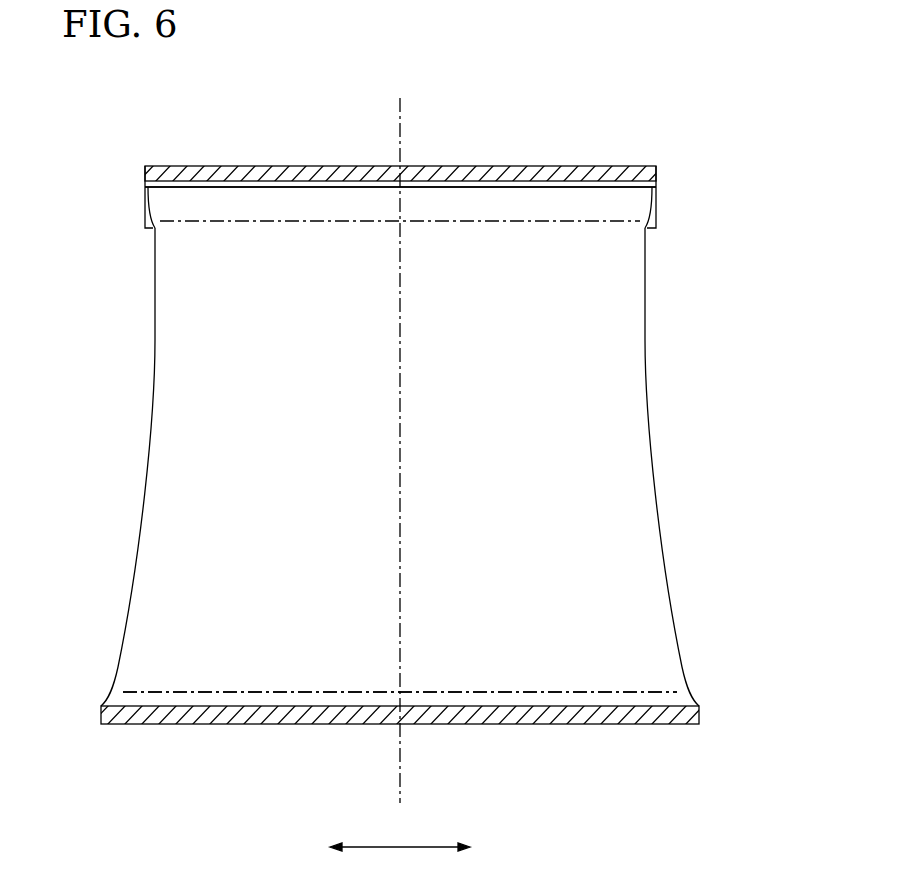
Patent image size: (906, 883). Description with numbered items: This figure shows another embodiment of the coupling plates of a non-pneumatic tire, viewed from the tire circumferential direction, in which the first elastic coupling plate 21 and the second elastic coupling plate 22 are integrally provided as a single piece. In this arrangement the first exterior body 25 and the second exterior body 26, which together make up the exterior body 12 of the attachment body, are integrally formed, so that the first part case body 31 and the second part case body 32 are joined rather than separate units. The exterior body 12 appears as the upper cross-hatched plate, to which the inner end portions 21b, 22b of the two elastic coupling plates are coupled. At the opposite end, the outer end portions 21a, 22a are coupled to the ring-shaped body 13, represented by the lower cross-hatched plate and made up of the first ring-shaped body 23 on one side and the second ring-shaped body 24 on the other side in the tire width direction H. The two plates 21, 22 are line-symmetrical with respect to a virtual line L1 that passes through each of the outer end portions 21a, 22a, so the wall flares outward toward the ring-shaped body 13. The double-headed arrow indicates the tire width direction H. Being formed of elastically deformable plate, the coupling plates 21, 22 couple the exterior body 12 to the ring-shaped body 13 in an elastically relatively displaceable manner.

The first elastic coupling plate 21 is at (432, 436).
The second elastic coupling plate 22 is at (620, 390).
The outer end portion 21a is at (400, 741).
The outer end portion 22a is at (233, 699).
The inner end portion 21b is at (400, 144).
The inner end portion 22b is at (455, 187).
The first ring-shaped body 23 is at (415, 765).
The second ring-shaped body 24 is at (415, 765).
The ring-shaped body 13 is at (572, 724).
The first exterior body 25 is at (439, 126).
The second exterior body 26 is at (439, 126).
The exterior body 12 is at (235, 166).
The first part case body 31 is at (439, 126).
The second part case body 32 is at (439, 126).
The virtual line L1 is at (400, 115).
The tire width direction H is at (400, 862).